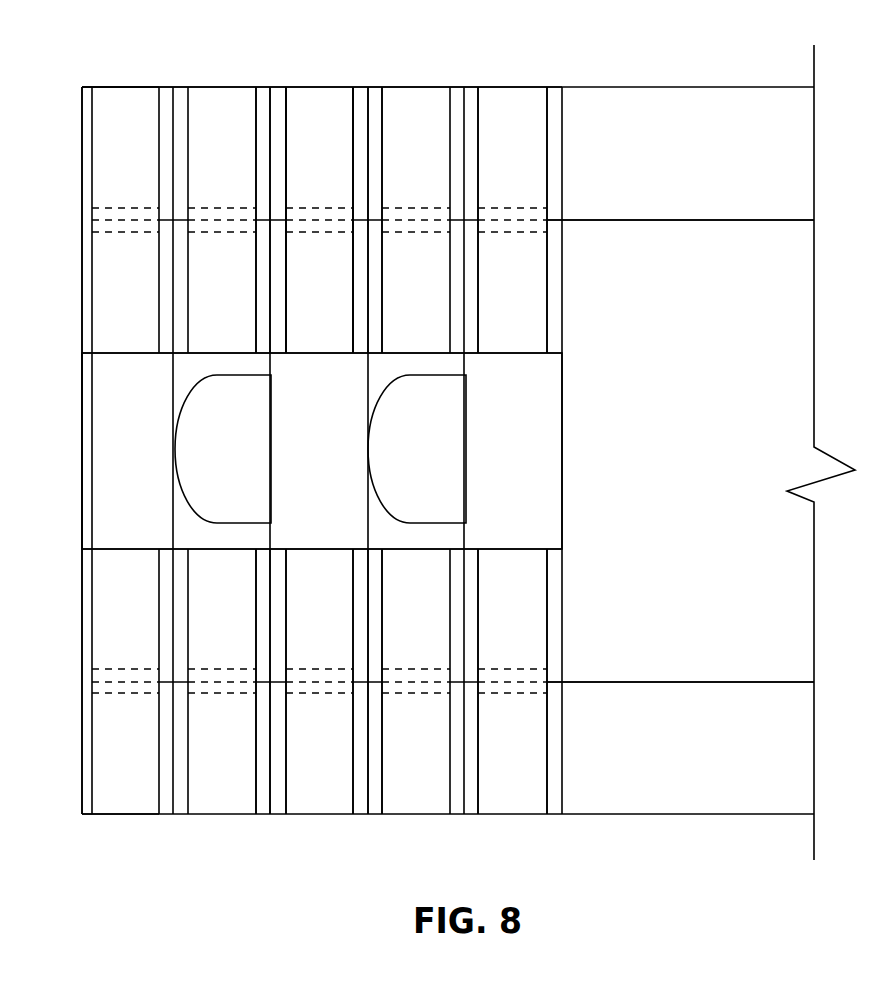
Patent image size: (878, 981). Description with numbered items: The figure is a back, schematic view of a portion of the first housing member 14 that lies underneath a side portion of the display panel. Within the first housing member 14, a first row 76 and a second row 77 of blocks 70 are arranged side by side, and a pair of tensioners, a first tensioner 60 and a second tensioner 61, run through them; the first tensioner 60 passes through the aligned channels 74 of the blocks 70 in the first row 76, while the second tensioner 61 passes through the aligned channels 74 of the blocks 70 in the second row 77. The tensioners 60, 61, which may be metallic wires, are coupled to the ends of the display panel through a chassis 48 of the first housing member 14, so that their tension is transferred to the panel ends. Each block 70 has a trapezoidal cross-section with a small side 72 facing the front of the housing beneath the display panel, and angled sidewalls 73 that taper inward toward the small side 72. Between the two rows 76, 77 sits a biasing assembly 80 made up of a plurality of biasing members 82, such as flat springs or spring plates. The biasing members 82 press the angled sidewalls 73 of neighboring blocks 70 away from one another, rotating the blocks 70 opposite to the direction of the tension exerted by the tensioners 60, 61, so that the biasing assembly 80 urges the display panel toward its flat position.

The first housing member 14 is at (211, 80).
The chassis 48 is at (82, 291).
The first tensioner 60 is at (586, 220).
The second tensioner 61 is at (607, 682).
The blocks 70 is at (316, 82).
The small side 72 is at (302, 100).
The angled sidewalls 73 is at (358, 100).
The channel 74 is at (326, 236).
The first row 76 is at (116, 80).
The second row 77 is at (107, 820).
The biasing assembly 80 is at (572, 442).
The biasing members 82 is at (198, 391).